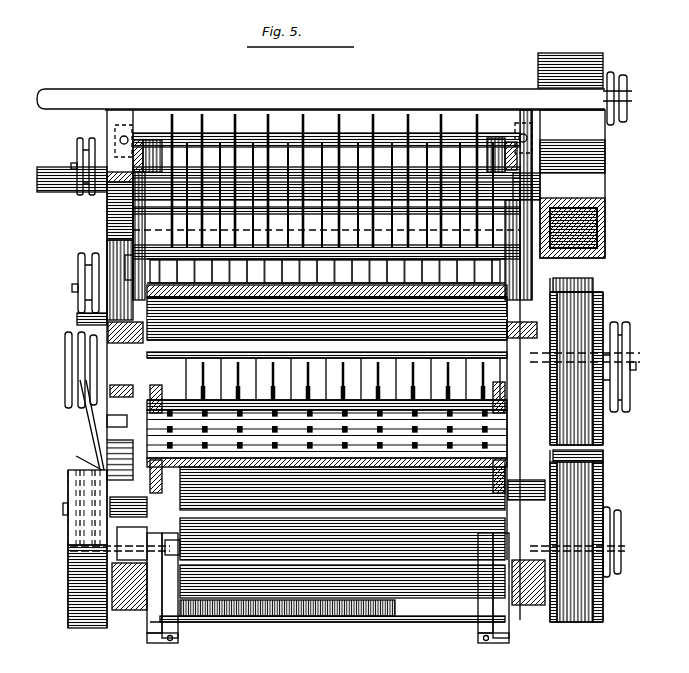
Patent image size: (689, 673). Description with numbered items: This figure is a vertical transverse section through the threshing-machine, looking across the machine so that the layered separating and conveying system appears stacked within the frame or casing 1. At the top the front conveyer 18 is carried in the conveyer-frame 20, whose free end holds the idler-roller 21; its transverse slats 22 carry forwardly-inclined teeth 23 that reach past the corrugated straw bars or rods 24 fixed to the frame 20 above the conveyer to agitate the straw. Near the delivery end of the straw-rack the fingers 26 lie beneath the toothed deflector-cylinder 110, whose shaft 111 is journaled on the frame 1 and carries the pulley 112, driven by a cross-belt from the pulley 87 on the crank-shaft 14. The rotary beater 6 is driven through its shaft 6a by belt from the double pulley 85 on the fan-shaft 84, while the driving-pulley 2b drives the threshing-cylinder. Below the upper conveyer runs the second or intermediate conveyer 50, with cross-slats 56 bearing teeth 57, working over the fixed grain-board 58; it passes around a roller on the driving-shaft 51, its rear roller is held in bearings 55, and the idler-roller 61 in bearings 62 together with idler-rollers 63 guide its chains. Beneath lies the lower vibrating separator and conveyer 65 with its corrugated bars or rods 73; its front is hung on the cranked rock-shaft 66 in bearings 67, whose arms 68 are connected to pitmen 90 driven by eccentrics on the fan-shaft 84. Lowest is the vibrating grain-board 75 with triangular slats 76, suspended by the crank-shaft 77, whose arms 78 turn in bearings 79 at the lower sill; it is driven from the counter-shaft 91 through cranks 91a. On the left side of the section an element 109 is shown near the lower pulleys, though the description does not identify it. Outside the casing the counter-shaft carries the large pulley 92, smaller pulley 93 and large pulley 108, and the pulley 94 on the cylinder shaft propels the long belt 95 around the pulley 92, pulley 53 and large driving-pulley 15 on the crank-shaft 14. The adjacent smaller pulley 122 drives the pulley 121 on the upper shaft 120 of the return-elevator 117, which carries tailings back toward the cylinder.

The frame 1 is at (478, 95).
The return-elevator 117 is at (571, 64).
The upper shaft of the return-elevator 120 is at (628, 93).
The pulley 121 is at (622, 92).
The corrugated straw bars or rods 24 is at (268, 114).
The toothed deflector-cylinder 110 is at (312, 142).
The transverse slats 22 is at (280, 180).
The front conveyer 18 is at (326, 227).
The conveyer-frame 20 is at (141, 140).
The forwardly-inclined teeth 23 is at (506, 228).
The bearings 55 is at (327, 294).
The second or intermediate conveyer 50 is at (178, 300).
The cross-slats 56 is at (330, 288).
The teeth 57 is at (300, 286).
The fixed grain-board 58 is at (368, 287).
The longitudinal corrugated bars or rods 73 is at (312, 374).
The lower vibrating separator and conveyer 65 is at (358, 437).
The triangular slats 76 is at (322, 492).
The counter-shaft 91 is at (75, 546).
The cranks 91a is at (182, 545).
The crank-shaft 77 is at (322, 620).
The bearings 67 is at (492, 500).
The cranked rock-shaft 66 is at (492, 485).
The pitmen 90 is at (108, 498).
The pulley 112 is at (77, 146).
The shaft 111 is at (73, 166).
The idler-roller 21 is at (112, 243).
The fingers 26 is at (136, 264).
The rotary beater 6 is at (77, 268).
The shaft of the beater 6a is at (76, 289).
The driving-pulley 2b is at (77, 320).
The pulley 87 is at (65, 353).
The crank-shaft 14 is at (64, 374).
The bearings 62 is at (108, 440).
The idler-roller 61 is at (107, 422).
The idler-rollers 63 is at (120, 453).
The lever 109 is at (76, 456).
The arms 68 is at (70, 470).
The double pulley 85 is at (68, 490).
The fan-shaft 84 is at (66, 508).
The large pulley 108 is at (70, 572).
The bearings 79 is at (75, 597).
The arms 78 is at (147, 620).
The vibrating grain-board 75 is at (160, 636).
The pulley 94 is at (598, 283).
The large driving-pulley 15 is at (595, 296).
The pulley 53 is at (596, 318).
The smaller pulley 122 is at (618, 352).
The driving-shaft 51 is at (624, 375).
The long belt 95 is at (577, 454).
The large pulley 92 is at (604, 602).
The smaller pulley 93 is at (622, 524).